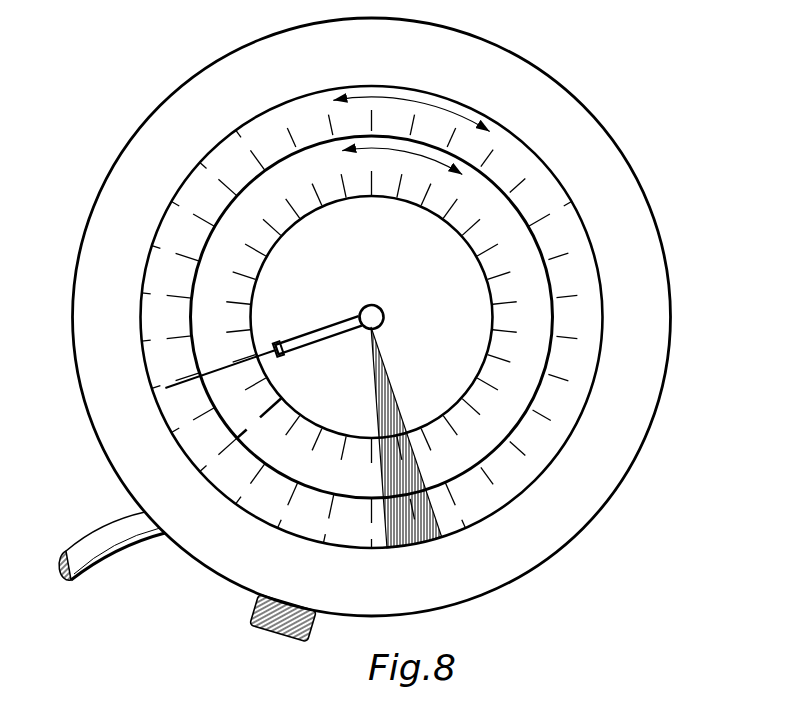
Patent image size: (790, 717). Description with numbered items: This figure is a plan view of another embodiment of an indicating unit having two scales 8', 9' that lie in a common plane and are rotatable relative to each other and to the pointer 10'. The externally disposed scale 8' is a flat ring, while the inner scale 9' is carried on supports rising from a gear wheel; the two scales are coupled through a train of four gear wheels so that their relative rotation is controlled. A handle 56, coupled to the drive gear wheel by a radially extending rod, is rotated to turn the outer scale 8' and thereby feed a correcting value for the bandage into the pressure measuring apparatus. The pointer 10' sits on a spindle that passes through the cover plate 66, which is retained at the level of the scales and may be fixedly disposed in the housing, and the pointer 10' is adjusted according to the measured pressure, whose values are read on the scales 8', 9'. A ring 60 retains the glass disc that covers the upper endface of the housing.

The outer scale 8' is at (399, 317).
The inner scale 9' is at (415, 351).
The pointer 10' is at (273, 351).
The handle 56 is at (262, 614).
The ring 60 is at (503, 552).
The cover plate 66 is at (389, 251).